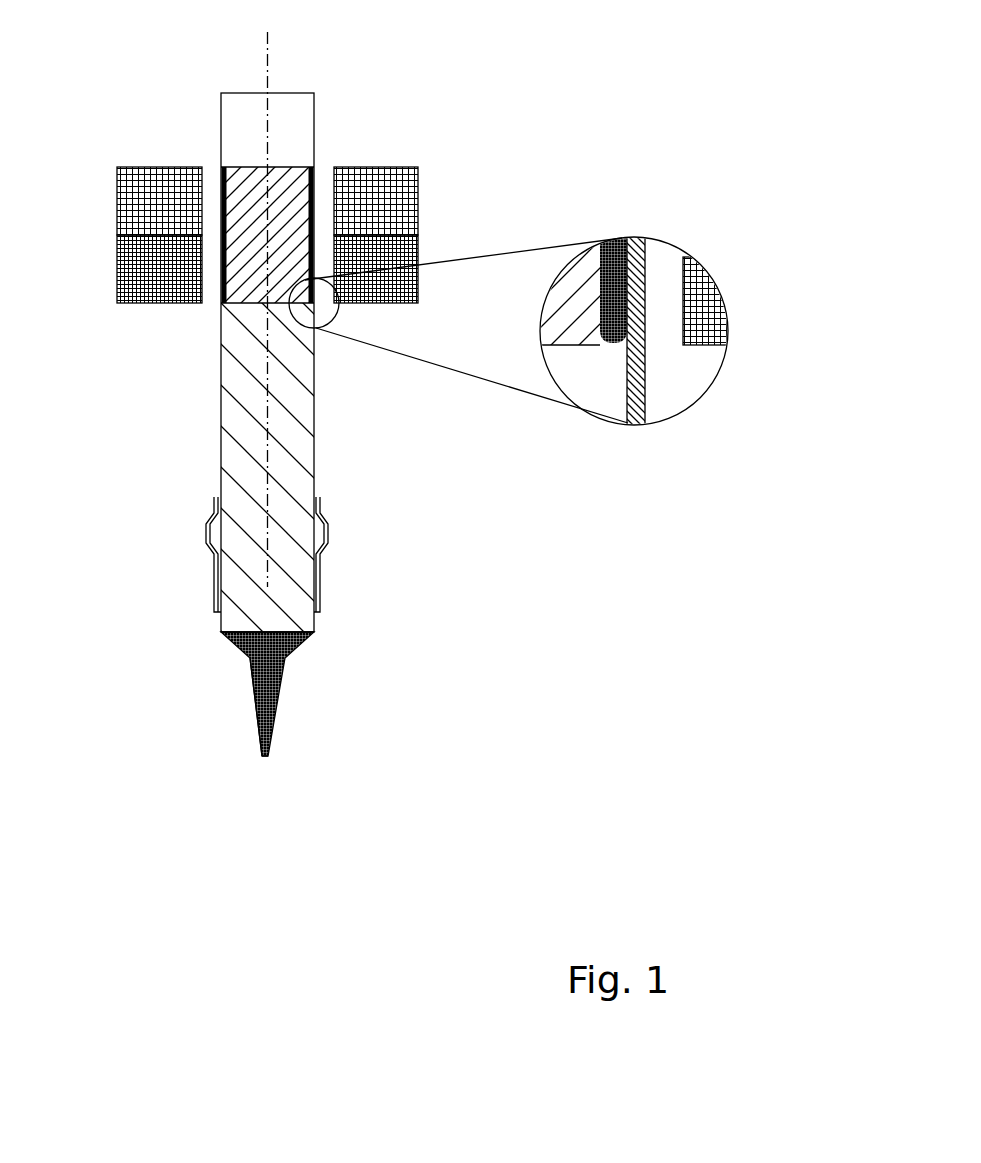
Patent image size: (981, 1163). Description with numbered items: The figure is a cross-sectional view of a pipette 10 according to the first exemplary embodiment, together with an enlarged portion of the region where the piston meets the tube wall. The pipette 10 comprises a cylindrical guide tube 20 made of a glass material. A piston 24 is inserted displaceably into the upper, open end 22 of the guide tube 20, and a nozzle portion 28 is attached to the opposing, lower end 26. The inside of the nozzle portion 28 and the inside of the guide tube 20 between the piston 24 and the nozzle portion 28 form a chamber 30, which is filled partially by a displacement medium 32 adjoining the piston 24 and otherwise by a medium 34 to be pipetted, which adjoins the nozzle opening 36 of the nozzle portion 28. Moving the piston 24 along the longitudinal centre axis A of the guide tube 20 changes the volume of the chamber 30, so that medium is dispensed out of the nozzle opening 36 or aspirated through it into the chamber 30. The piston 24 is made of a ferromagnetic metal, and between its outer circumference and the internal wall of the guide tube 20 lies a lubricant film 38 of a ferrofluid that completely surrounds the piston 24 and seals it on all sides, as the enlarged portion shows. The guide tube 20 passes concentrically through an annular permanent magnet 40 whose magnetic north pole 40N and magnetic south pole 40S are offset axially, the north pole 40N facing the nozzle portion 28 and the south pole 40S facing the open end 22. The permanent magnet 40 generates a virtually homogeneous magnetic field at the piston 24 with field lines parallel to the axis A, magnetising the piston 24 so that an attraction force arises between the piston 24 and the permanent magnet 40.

The pipette 10 is at (494, 85).
The guide tube 20 is at (221, 127).
The upper open end 22 is at (315, 108).
The piston 24 is at (283, 175).
The lower end 26 is at (307, 582).
The nozzle portion 28 is at (275, 679).
The chamber 30 is at (248, 506).
The displacement medium 32 is at (287, 425).
The medium to be pipetted 34 is at (247, 668).
The nozzle opening 36 is at (267, 756).
The lubricant film of ferrofluid 38 is at (617, 346).
The annular permanent magnet 40 is at (424, 241).
The magnetic south pole 40S is at (418, 205).
The magnetic north pole 40N is at (418, 287).
The longitudinal centre axis A is at (270, 50).